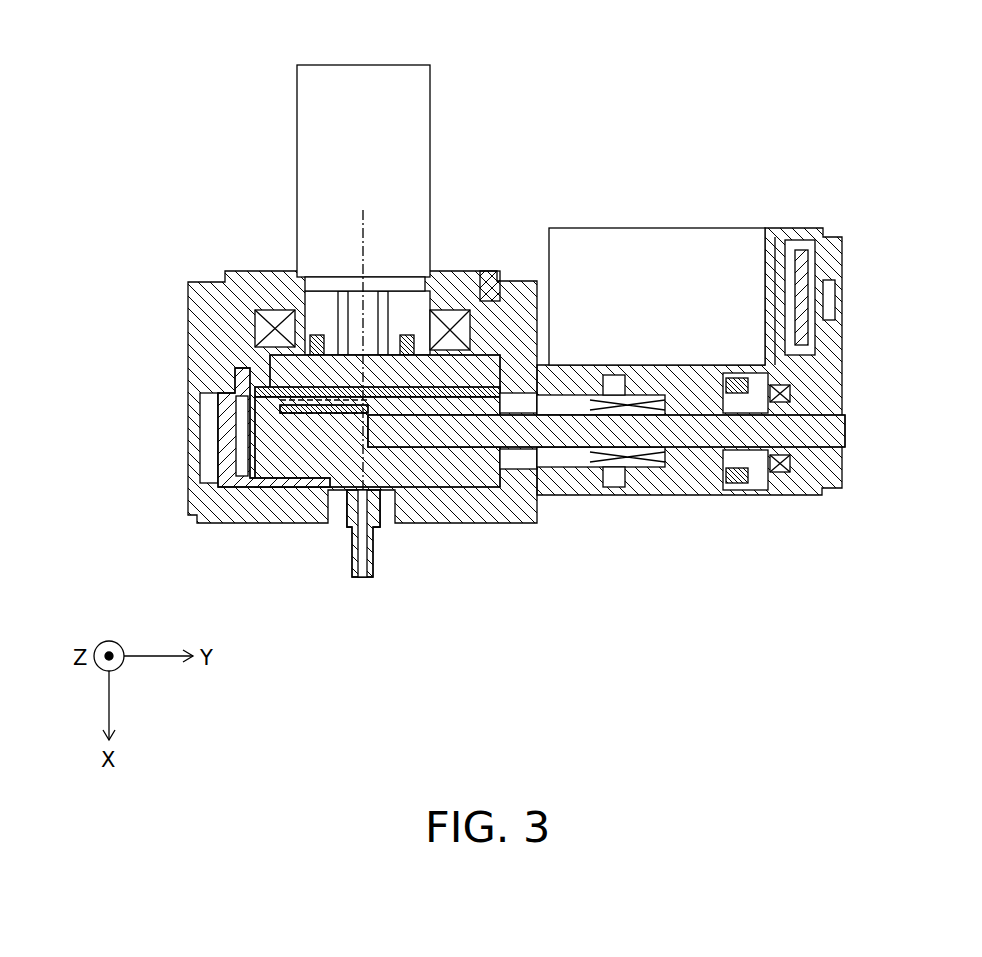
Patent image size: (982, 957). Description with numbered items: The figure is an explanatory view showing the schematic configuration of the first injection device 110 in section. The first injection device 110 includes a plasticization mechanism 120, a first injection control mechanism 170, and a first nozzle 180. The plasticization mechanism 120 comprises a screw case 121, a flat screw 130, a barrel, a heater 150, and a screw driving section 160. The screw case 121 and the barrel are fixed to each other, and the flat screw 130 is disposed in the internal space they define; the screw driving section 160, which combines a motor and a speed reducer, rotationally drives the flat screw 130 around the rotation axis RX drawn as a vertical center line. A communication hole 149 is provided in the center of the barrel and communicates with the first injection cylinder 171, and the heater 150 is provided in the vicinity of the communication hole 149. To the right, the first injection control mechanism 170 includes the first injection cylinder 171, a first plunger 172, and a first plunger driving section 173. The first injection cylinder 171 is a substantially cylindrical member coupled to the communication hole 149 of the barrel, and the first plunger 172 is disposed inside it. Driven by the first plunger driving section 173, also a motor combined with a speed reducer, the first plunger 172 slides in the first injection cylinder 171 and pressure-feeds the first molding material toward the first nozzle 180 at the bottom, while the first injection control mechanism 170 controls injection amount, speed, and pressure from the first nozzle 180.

The first injection device 110 is at (183, 150).
The plasticization mechanism 120 is at (500, 213).
The screw case 121 is at (272, 382).
The flat screw 130 is at (280, 355).
The communication hole 149 is at (360, 452).
The heater 150 is at (300, 421).
The screw driving section 160 is at (297, 218).
The first injection control mechanism 170 is at (782, 517).
The first injection cylinder 171 is at (407, 432).
The first plunger 172 is at (706, 480).
The first plunger driving section 173 is at (660, 242).
The first nozzle 180 is at (352, 562).